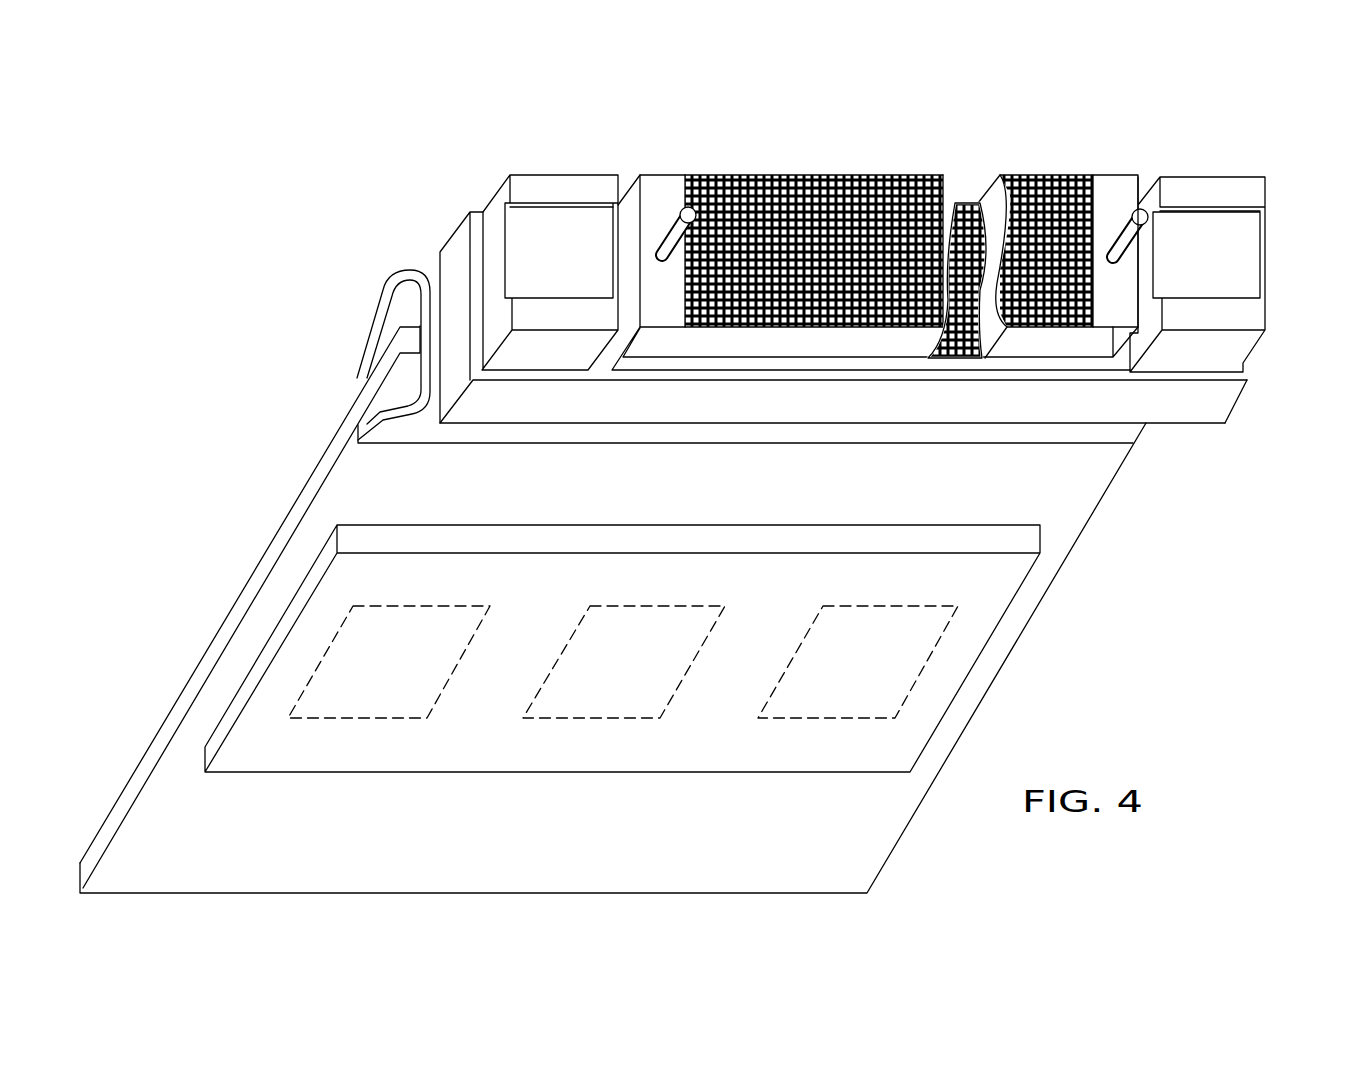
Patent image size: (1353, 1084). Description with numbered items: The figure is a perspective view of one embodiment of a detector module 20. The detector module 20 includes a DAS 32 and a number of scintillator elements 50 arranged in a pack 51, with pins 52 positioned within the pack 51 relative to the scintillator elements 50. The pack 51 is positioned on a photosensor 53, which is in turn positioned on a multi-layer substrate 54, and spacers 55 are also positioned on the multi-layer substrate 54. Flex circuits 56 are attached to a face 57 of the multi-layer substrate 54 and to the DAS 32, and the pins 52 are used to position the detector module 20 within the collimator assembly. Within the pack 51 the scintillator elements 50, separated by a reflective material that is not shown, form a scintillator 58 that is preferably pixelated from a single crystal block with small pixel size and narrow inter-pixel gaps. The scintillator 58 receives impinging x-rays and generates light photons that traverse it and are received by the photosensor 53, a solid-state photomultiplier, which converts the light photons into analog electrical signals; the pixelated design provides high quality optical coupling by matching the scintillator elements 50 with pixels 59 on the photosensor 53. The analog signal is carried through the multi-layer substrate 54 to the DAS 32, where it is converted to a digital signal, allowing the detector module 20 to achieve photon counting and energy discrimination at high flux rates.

The detector module 20 is at (1150, 153).
The DAS 32 is at (1017, 618).
The scintillator elements 50 is at (778, 188).
The pack 51 is at (682, 160).
The pins 52 is at (665, 222).
The photosensor 53 is at (1100, 367).
The multi-layer substrate 54 is at (1222, 403).
The spacers 55 is at (555, 178).
The flex circuits 56 is at (377, 312).
The face 57 is at (438, 260).
The scintillator 58 is at (830, 175).
The pixels 59 is at (970, 205).